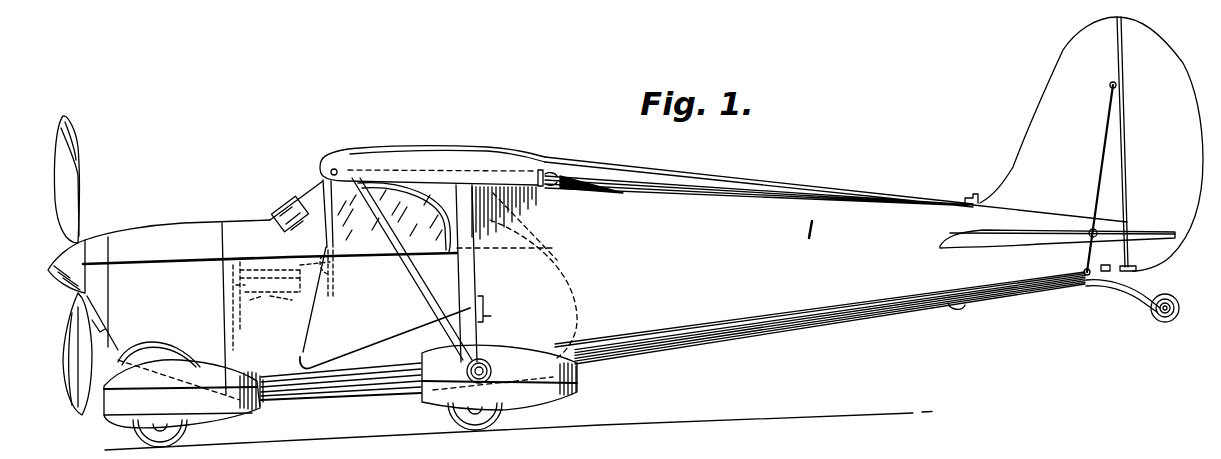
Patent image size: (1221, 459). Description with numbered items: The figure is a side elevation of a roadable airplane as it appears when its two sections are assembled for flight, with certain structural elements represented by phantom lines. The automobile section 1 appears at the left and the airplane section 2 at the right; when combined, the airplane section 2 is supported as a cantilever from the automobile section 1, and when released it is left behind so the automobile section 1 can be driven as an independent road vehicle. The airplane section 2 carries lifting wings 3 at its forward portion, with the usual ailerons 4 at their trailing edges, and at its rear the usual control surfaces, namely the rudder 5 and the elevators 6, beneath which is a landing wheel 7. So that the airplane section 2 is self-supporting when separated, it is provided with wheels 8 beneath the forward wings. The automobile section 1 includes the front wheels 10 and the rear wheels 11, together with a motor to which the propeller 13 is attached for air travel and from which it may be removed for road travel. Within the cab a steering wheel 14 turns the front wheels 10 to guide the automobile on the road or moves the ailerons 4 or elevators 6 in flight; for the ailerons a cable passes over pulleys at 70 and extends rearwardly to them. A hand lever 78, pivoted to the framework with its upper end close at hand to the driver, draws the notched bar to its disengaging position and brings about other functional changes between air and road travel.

The automobile section 1 is at (188, 216).
The airplane section 2 is at (758, 184).
The lifting wings 3 is at (509, 164).
The ailerons 4 is at (580, 178).
The rudder 5 is at (1172, 77).
The elevators 6 is at (1152, 238).
The landing wheel 7 is at (1160, 322).
The wheels 8 is at (489, 362).
The front wheels 10 is at (185, 436).
The rear wheels 11 is at (457, 423).
The propeller 13 is at (77, 178).
The steering wheel 14 is at (332, 244).
The pulleys 70 is at (261, 381).
The hand lever 78 is at (285, 211).